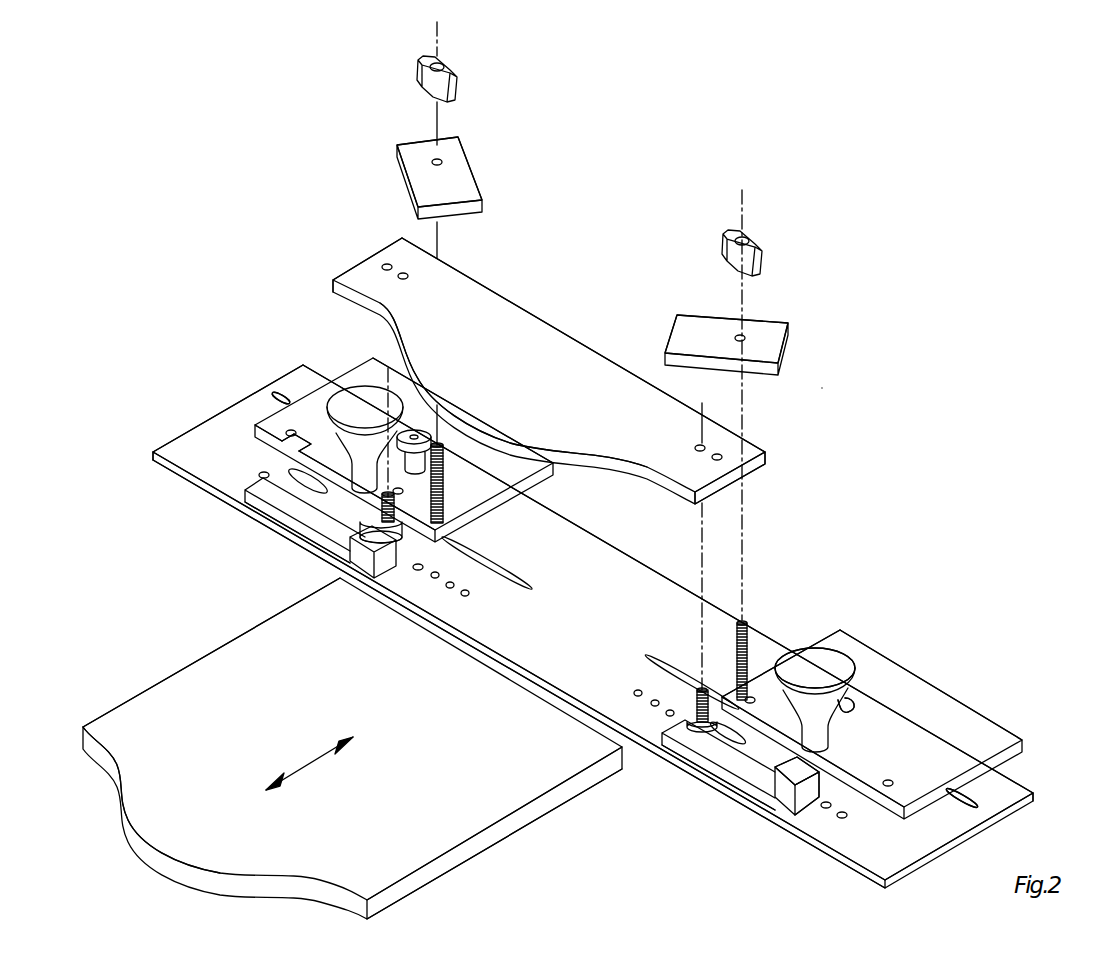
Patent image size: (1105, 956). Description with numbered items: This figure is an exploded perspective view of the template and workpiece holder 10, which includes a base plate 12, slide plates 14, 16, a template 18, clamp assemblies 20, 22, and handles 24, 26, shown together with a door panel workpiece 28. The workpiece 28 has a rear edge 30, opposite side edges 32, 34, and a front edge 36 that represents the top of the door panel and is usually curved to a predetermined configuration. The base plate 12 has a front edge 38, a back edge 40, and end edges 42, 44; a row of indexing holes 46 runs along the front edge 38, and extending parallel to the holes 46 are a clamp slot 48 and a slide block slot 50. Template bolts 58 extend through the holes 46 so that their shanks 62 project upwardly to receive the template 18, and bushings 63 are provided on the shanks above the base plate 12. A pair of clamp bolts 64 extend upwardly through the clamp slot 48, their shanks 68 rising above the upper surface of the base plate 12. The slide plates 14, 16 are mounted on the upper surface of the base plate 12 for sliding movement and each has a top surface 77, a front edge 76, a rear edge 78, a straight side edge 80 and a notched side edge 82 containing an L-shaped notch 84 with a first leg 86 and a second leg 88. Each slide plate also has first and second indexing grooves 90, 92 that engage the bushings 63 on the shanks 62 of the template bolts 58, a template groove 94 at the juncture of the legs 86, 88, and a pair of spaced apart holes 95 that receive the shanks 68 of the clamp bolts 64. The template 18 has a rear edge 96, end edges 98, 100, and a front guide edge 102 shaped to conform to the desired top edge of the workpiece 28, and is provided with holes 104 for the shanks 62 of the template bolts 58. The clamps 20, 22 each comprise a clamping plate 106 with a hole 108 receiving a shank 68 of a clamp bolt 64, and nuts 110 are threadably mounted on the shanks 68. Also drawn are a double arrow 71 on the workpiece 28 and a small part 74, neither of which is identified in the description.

The template and workpiece holder 10 is at (822, 388).
The base plate 12 is at (898, 884).
The slide plate 14 is at (997, 718).
The slide plate 16 is at (556, 466).
The template 18 is at (550, 326).
The clamp assembly 20 is at (792, 322).
The clamp assembly 22 is at (392, 148).
The handle 24 is at (360, 390).
The handle 26 is at (832, 660).
The door panel workpiece 28 is at (462, 862).
The rear edge 30 is at (492, 660).
The side edge 32 is at (227, 641).
The side edge 34 is at (492, 838).
The front edge 36 is at (155, 843).
The front edge 38 is at (843, 862).
The back edge 40 is at (635, 560).
The edge 42 is at (218, 410).
The edge 44 is at (946, 848).
The indexing holes 46 is at (466, 596).
The clamp slot 48 is at (522, 582).
The slide block slot 50 is at (278, 398).
The template bolts 58 is at (421, 567).
The shanks 62 is at (368, 520).
The bushings 63 is at (355, 548).
The clamp bolts 64 is at (445, 455).
The shanks 68 is at (445, 478).
The direction of movement 71 is at (281, 779).
The adjustment knob 74 is at (416, 432).
The front edge 76 is at (250, 487).
The top surface 77 is at (948, 700).
The rear edge 78 is at (394, 348).
The straight side edge 80 is at (468, 518).
The notched side edge 82 is at (290, 392).
The L-shaped notch 84 is at (280, 457).
The first leg 86 is at (263, 439).
The second leg 88 is at (290, 482).
The first indexing groove 90 is at (388, 522).
The second indexing groove 92 is at (262, 497).
The template groove 94 is at (300, 459).
The holes 95 is at (291, 430).
The rear edge 96 is at (512, 300).
The end edge 98 is at (347, 273).
The end edge 100 is at (735, 482).
The front guide edge 102 is at (520, 445).
The holes 104 is at (403, 272).
The clamping plate 106 is at (468, 190).
The hole 108 is at (440, 160).
The nuts 110 is at (420, 72).